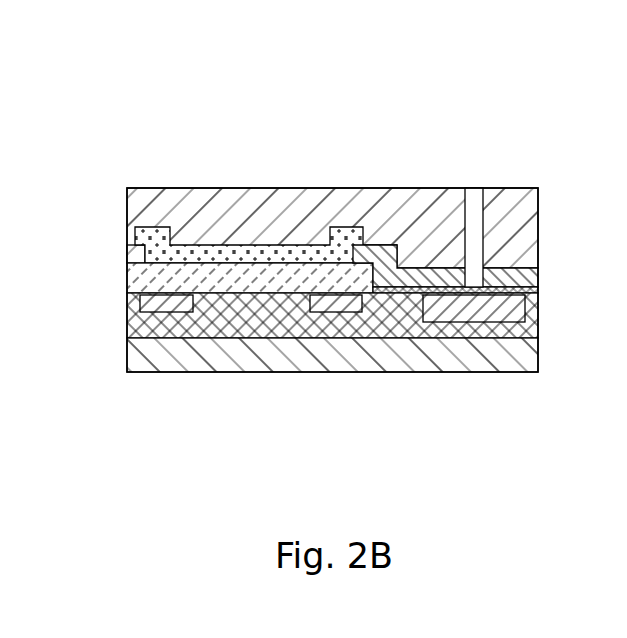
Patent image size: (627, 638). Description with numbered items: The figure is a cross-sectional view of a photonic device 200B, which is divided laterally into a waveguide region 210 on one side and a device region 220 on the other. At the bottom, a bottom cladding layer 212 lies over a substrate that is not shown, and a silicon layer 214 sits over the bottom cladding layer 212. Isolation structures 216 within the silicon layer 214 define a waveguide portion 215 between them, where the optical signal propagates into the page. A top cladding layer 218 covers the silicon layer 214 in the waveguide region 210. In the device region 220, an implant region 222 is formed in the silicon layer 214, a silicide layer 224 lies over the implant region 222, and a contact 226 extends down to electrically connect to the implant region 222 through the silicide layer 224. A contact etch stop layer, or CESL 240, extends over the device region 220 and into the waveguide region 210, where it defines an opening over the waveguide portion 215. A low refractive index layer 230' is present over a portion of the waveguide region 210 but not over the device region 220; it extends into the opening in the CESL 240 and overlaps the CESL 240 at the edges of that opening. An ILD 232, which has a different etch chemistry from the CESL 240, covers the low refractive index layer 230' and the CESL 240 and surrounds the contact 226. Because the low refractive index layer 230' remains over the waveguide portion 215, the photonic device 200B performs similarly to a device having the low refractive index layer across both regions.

The photonic device 200B is at (142, 86).
The waveguide region 210 is at (127, 173).
The device region 220 is at (538, 173).
The bottom cladding layer 212 is at (127, 358).
The silicon layer 214 is at (127, 323).
The waveguide portion 215 is at (263, 325).
The isolation structures 216 is at (140, 304).
The top cladding layer 218 is at (127, 283).
The implant region 222 is at (520, 305).
The silicide layer 224 is at (538, 290).
The contact 226 is at (478, 217).
The low refractive index layer 230' is at (197, 240).
The ILD 232 is at (127, 207).
The contact etch stop layer (CESL) 240 is at (538, 277).